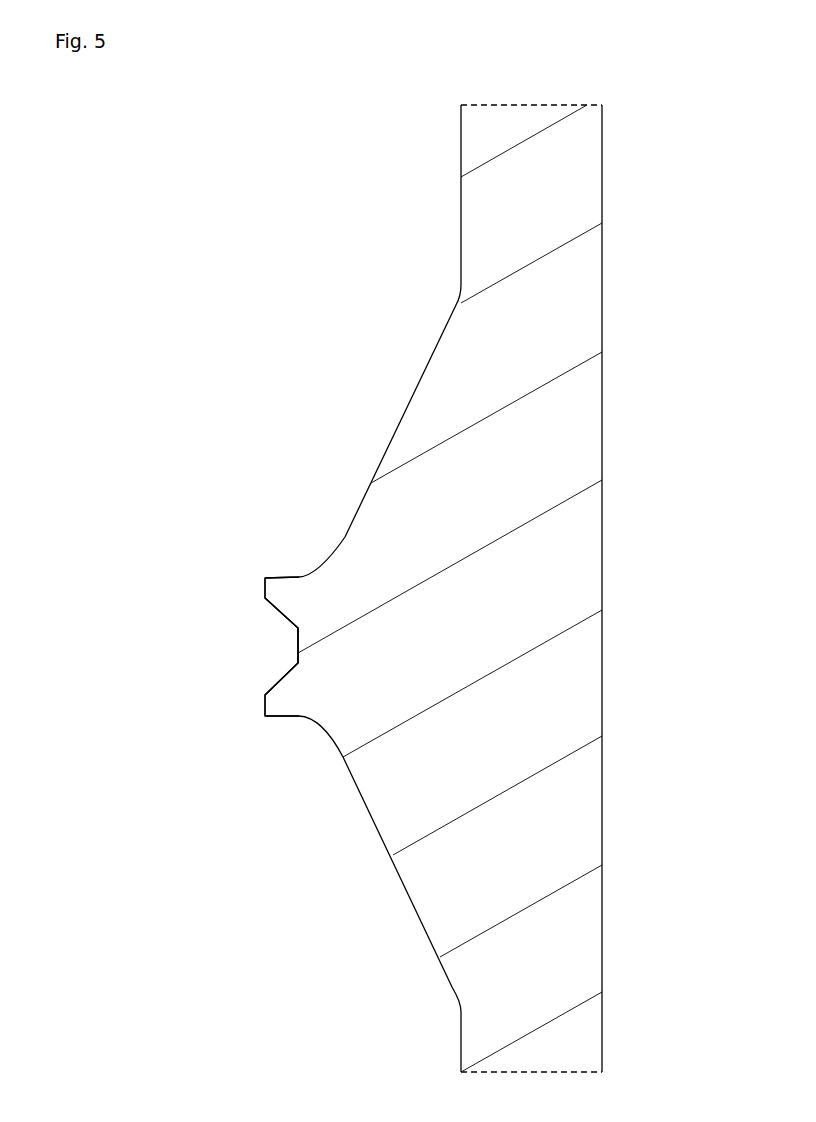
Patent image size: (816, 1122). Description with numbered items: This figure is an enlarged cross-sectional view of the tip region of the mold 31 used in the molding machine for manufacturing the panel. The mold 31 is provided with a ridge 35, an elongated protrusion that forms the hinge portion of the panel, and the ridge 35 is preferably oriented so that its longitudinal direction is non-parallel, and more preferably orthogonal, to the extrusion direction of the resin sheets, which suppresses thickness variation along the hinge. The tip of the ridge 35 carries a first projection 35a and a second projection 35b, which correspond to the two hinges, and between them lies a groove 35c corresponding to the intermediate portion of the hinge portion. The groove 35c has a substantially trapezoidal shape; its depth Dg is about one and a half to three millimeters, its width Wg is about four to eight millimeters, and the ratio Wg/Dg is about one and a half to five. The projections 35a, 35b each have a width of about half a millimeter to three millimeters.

The mold 31 is at (592, 675).
The ridge 35 is at (312, 433).
The first projection 35a is at (265, 580).
The second projection 35b is at (265, 711).
The groove 35c is at (273, 644).
The depth of the groove Dg is at (299, 625).
The width of the groove Wg is at (265, 599).